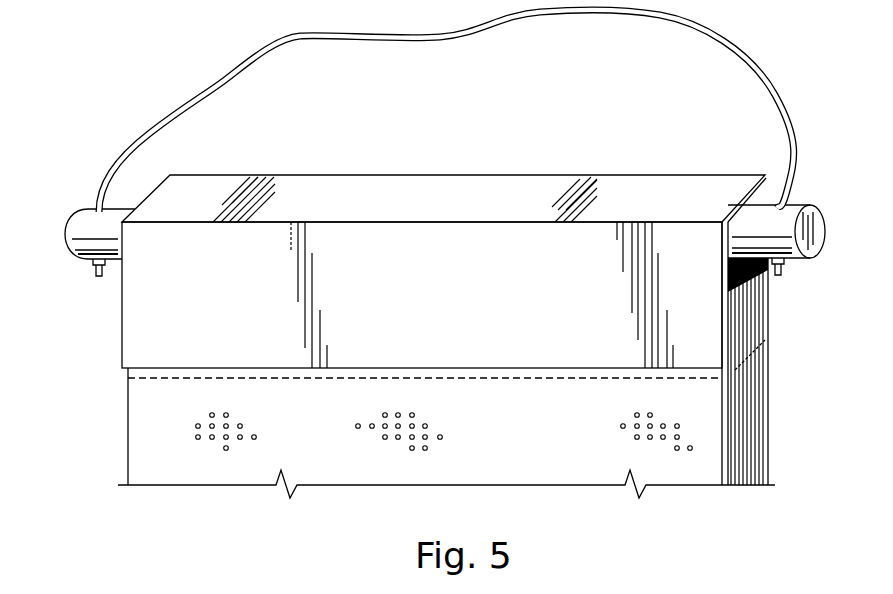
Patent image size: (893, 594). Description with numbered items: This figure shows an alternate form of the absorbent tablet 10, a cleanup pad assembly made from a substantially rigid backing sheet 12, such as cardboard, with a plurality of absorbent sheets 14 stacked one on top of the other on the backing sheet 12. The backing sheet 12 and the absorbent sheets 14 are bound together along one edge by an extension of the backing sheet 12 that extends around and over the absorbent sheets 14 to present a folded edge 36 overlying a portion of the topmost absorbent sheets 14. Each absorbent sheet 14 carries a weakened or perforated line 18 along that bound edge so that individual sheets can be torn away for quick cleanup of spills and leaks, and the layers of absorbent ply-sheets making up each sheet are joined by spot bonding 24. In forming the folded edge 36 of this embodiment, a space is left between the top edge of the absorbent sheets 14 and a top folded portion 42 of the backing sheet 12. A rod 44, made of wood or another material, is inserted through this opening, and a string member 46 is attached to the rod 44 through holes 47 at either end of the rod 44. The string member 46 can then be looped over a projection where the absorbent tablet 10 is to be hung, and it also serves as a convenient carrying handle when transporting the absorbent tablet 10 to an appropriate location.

The absorbent tablet 10 is at (181, 88).
The backing sheet 12 is at (770, 440).
The absorbent sheets 14 is at (748, 494).
The perforated line 18 is at (545, 380).
The spot bonding 24 is at (195, 425).
The folded edge 36 is at (232, 341).
The top folded portion 42 is at (487, 211).
The rod 44 is at (822, 218).
The string member 46 is at (528, 28).
The holes 47 is at (84, 211).